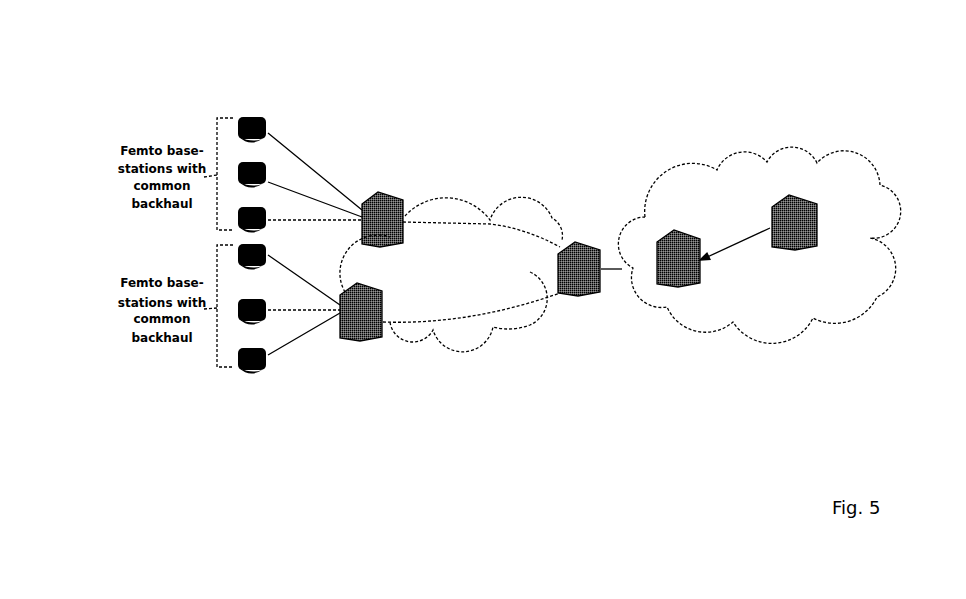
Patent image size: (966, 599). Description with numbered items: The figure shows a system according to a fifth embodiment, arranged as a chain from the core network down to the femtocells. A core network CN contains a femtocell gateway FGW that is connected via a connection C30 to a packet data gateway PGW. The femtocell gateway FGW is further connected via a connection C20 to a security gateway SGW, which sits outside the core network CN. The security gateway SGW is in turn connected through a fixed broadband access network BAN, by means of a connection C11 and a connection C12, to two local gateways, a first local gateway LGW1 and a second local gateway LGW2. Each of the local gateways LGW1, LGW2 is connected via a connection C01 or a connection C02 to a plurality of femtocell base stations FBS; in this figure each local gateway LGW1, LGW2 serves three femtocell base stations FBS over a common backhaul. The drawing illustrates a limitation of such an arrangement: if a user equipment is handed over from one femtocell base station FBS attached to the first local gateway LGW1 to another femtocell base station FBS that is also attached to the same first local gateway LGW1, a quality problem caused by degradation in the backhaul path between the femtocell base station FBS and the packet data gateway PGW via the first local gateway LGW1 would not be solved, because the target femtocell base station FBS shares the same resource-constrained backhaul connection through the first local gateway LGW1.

The femtocell base station FBS is at (262, 216).
The connection C02 is at (327, 190).
The connection C01 is at (300, 318).
The local gateway LGW2 is at (388, 193).
The first local gateway LGW1 is at (348, 342).
The fixed broadband access network BAN is at (530, 197).
The connection C12 is at (487, 223).
The connection C11 is at (487, 318).
The security gateway SGW is at (592, 242).
The connection C20 is at (613, 270).
The core network CN is at (808, 150).
The femtocell gateway FGW is at (672, 288).
The packet data gateway PGW is at (773, 250).
The connection C30 is at (768, 222).